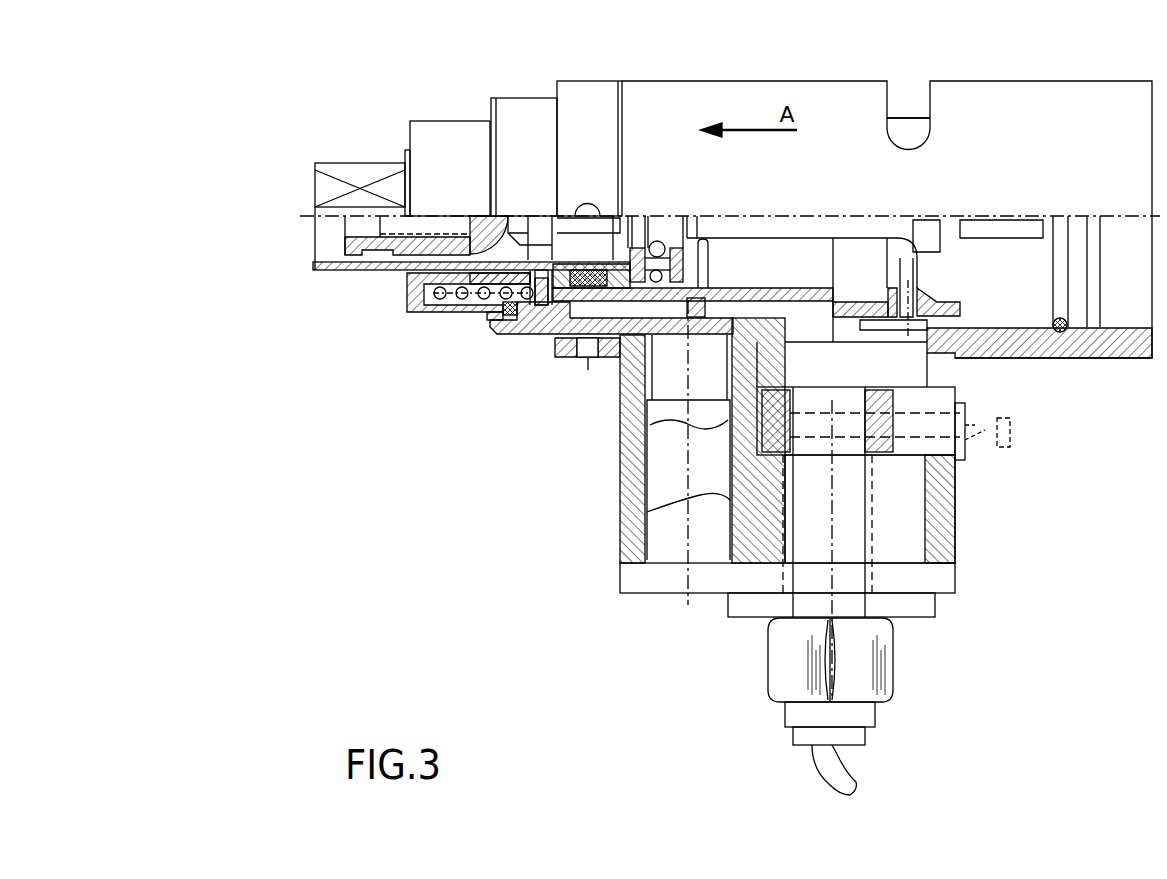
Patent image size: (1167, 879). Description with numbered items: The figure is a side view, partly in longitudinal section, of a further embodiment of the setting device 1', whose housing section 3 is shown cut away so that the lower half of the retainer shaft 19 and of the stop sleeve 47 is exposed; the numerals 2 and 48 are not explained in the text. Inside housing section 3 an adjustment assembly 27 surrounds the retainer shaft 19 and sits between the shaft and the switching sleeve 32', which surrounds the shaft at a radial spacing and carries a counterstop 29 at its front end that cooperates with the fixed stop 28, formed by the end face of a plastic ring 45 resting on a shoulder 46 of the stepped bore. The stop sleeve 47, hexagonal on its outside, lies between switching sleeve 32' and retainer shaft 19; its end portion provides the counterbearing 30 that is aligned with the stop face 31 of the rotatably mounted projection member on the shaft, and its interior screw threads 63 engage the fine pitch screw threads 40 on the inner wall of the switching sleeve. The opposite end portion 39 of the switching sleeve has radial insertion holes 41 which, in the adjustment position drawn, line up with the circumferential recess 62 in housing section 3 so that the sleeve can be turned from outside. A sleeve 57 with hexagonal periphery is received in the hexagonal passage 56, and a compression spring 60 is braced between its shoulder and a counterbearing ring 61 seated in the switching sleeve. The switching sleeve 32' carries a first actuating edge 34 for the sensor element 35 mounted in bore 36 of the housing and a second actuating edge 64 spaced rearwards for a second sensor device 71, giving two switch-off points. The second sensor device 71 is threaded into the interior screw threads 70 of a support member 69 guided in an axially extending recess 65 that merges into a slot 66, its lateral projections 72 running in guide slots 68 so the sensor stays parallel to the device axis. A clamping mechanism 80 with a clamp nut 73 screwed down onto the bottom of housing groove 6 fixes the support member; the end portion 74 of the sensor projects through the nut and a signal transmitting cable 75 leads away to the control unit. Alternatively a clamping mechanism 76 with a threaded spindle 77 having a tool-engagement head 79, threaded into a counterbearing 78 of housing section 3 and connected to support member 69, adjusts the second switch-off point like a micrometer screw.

The device 1' is at (816, 65).
The housing 2 is at (1056, 82).
The housing section 3 is at (722, 120).
The housing groove 6 is at (748, 578).
The retainer shaft 19 is at (632, 260).
The adjustment assembly 27 is at (672, 314).
The fixed stop 28 is at (550, 330).
The counterstop 29 is at (510, 318).
The counterbearing 30 is at (612, 233).
The stop face 31 is at (645, 265).
The switching sleeve 32' is at (720, 239).
The actuating edge 34 is at (660, 372).
The sensor element 35 is at (650, 440).
The bore 36 is at (728, 505).
The end portion 39 is at (940, 305).
The screw threads 40 is at (705, 292).
The insertion holes 41 is at (912, 285).
The plastic ring 45 is at (505, 312).
The shoulder 46 is at (450, 308).
The stop sleeve 47 is at (541, 255).
The coil 48 is at (342, 168).
The passage 56 is at (412, 300).
The sleeve 57 is at (405, 275).
The compression spring 60 is at (450, 237).
The counterbearing ring 61 is at (540, 306).
The recess 62 is at (905, 112).
The screw threads 63 is at (562, 262).
The second actuating edge 64 is at (820, 318).
The recess 65 is at (945, 535).
The slot 66 is at (945, 372).
The guide slots 68 is at (955, 405).
The support member 69 is at (765, 385).
The interior screw threads 70 is at (790, 410).
The second sensor device 71 is at (850, 535).
The lateral projections 72 is at (850, 450).
The clamp nut 73 is at (785, 672).
The end portion 74 is at (860, 715).
The signal transmitting cable 75 is at (840, 768).
The clamping mechanism 76 is at (985, 445).
The threaded spindle 77 is at (975, 440).
The counterbearing 78 is at (963, 445).
The tool-engagement head 79 is at (1012, 437).
The clamping mechanism 80 is at (765, 655).